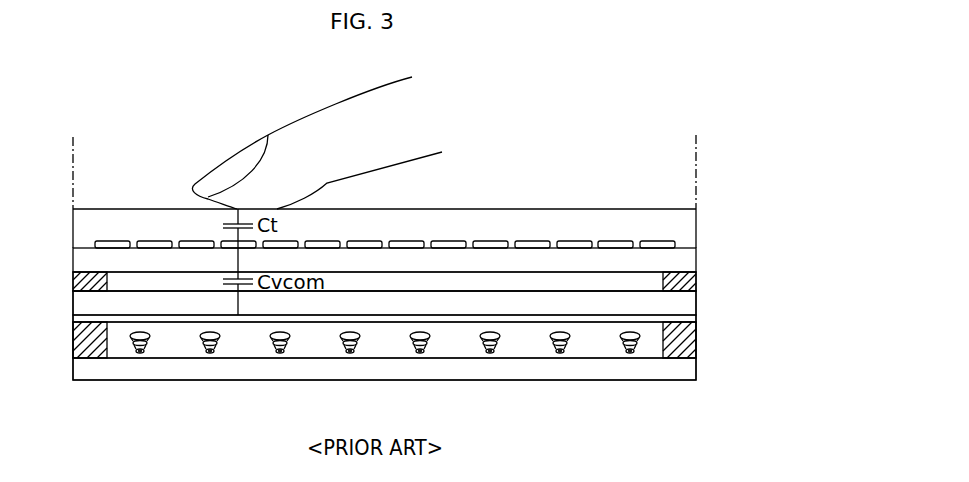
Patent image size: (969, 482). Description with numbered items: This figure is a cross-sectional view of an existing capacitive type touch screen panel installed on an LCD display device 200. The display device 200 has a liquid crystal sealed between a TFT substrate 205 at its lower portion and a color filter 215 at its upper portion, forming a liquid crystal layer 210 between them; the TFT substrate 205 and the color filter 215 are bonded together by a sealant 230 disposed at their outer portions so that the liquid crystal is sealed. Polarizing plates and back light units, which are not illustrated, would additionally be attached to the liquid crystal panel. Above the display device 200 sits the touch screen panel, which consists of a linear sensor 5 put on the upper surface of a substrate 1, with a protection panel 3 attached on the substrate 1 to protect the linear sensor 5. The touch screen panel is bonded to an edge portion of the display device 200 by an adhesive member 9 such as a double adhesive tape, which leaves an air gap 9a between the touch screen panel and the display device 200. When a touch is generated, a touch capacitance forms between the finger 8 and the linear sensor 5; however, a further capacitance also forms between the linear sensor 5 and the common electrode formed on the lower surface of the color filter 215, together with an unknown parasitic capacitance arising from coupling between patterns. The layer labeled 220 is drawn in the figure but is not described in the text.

The substrate 1 is at (593, 263).
The protection panel 3 is at (493, 228).
The linear sensor 5 is at (110, 234).
The finger 8 is at (296, 129).
The adhesive member 9 is at (687, 272).
The air gap 9a is at (527, 282).
The display device 200 is at (67, 292).
The TFT substrate 205 is at (452, 367).
The liquid crystal layer 210 is at (382, 348).
The color filter 215 is at (172, 305).
The thin layer / polarizer 220 is at (313, 320).
The sealant 230 is at (677, 350).